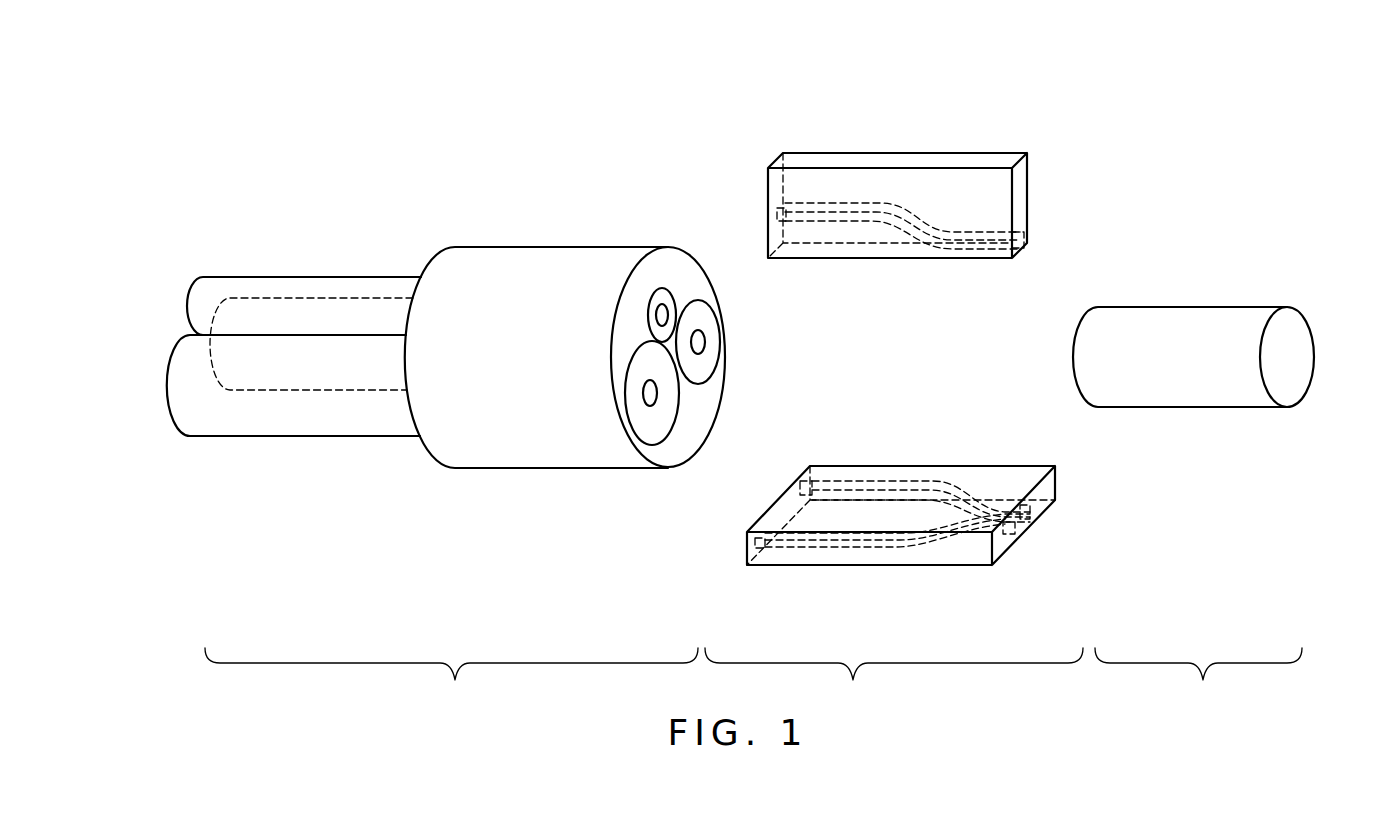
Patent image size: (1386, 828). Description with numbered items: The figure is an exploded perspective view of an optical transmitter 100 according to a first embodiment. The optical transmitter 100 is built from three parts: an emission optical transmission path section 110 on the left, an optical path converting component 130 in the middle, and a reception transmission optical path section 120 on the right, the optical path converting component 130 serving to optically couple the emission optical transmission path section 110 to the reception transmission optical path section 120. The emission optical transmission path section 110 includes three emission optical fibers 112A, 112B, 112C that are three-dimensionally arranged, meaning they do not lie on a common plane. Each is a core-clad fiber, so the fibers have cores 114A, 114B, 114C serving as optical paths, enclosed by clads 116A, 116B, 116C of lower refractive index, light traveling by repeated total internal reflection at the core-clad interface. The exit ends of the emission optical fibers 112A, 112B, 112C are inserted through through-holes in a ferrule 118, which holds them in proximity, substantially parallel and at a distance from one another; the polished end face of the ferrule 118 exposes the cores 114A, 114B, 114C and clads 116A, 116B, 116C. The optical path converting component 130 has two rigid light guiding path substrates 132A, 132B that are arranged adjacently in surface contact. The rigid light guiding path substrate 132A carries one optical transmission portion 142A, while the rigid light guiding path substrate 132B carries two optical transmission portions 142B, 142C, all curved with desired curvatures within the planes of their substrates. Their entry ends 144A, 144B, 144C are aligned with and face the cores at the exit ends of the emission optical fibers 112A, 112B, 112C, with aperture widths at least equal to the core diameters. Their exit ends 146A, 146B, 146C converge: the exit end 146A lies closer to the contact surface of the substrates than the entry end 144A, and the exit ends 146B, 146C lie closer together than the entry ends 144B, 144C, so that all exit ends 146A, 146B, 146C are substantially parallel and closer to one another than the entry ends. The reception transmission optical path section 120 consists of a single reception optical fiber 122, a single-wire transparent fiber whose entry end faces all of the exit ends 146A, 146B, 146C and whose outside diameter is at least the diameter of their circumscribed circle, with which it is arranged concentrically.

The optical transmitter 100 is at (449, 140).
The emission optical transmission path section 110 is at (479, 461).
The emission optical fiber 112A is at (222, 290).
The emission optical fiber 112B is at (318, 310).
The emission optical fiber 112C is at (232, 420).
The core 114A is at (661, 305).
The core 114B is at (705, 340).
The core 114C is at (657, 393).
The clad 116A is at (672, 305).
The clad 116B is at (706, 362).
The clad 116C is at (648, 425).
The ferrule 118 is at (533, 268).
The reception transmission optical path section 120 is at (1193, 487).
The reception optical fiber 122 is at (1236, 320).
The optical path converting component 130 is at (894, 403).
The rigid light guiding path substrate 132A is at (988, 162).
The rigid light guiding path substrate 132B is at (962, 560).
The optical transmission portion 142A is at (878, 200).
The optical transmission portion 142B is at (903, 480).
The optical transmission portion 142C is at (877, 550).
The entry end 144A is at (790, 207).
The entry end 144B is at (815, 482).
The entry end 144C is at (770, 553).
The exit end 146A is at (1025, 215).
The exit end 146B is at (1020, 500).
The exit end 146C is at (1008, 535).